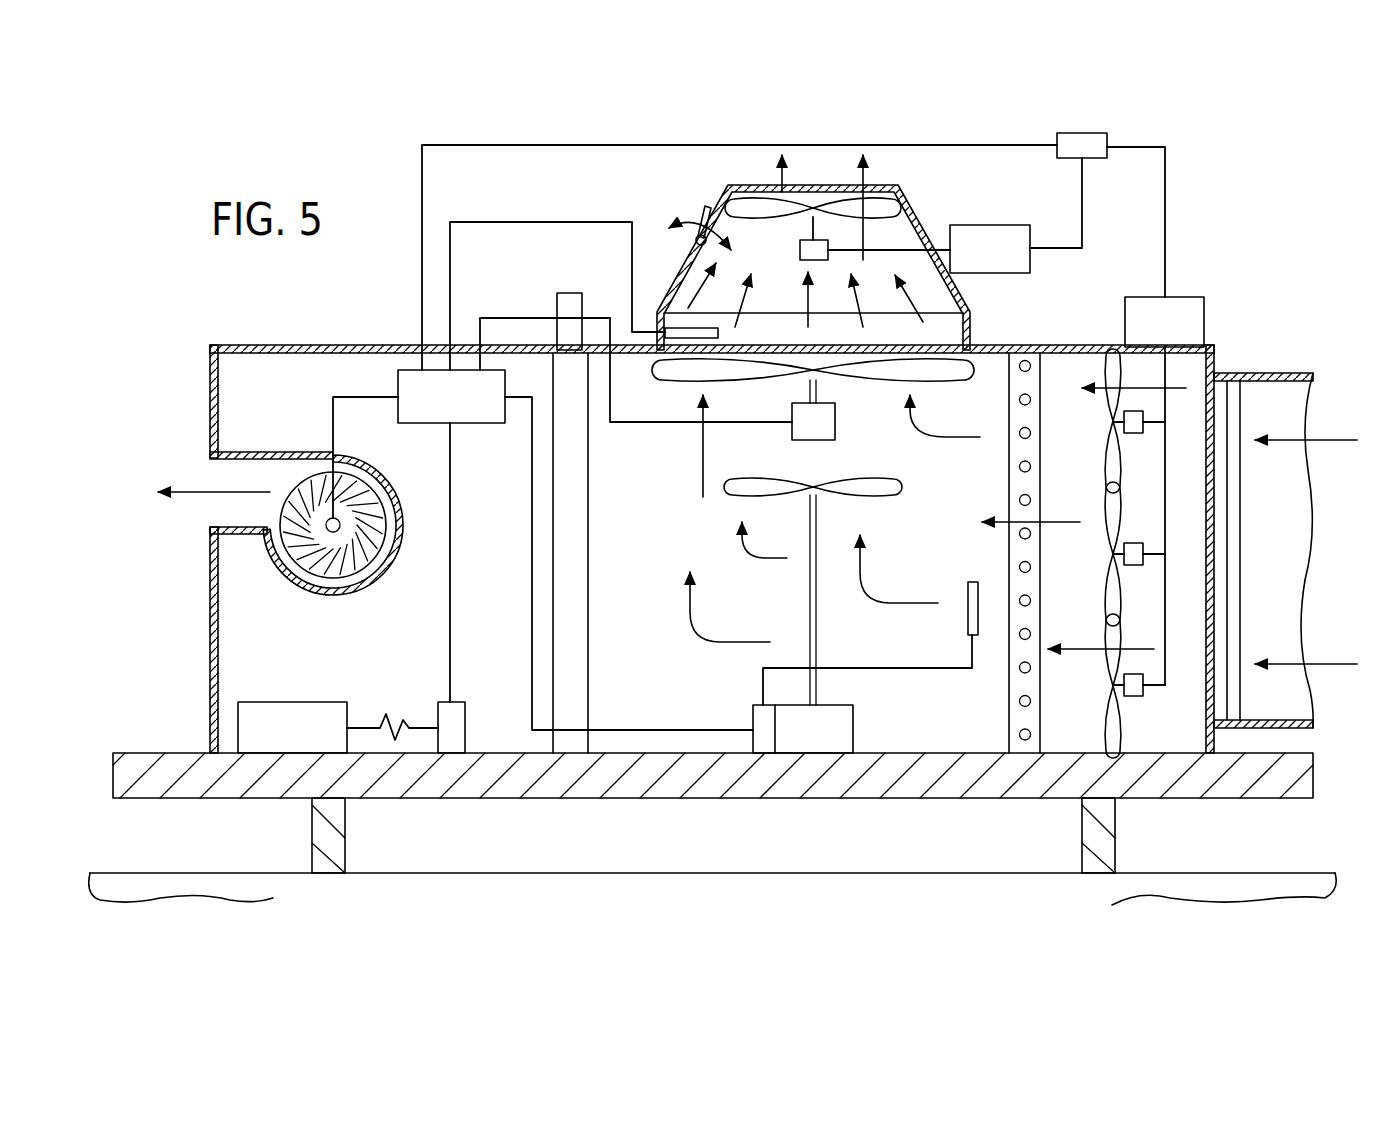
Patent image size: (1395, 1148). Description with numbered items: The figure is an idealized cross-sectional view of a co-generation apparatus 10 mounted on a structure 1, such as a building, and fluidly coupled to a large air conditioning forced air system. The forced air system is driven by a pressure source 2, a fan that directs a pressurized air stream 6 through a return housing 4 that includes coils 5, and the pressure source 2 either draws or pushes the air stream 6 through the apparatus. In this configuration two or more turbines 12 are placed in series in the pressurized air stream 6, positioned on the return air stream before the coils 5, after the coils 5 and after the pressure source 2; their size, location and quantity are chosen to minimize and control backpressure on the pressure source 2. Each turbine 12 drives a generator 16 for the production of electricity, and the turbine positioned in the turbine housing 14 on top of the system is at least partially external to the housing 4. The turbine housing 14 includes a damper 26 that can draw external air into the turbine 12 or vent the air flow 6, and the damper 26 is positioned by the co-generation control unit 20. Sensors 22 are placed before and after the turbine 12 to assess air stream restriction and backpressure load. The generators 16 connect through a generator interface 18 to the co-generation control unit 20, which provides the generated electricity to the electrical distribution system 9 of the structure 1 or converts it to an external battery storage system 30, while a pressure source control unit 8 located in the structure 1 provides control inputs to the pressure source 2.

The structure 1 is at (1026, 905).
The pressure source 2 is at (349, 536).
The housing 4 is at (1270, 373).
The coils 5 is at (1019, 468).
The pressurized air stream 6 is at (913, 604).
The pressure source control unit 8 is at (570, 293).
The electrical distribution system 9 is at (466, 716).
The co-generation apparatus 10 is at (1228, 270).
The turbine 12 is at (757, 218).
The turbine housing 14 is at (917, 210).
The generator 16 is at (975, 264).
The generator interface 18 is at (1107, 135).
The co-generation control unit 20 is at (436, 410).
The sensor 22 is at (683, 327).
The damper 26 is at (700, 228).
The external battery storage system 30 is at (315, 702).